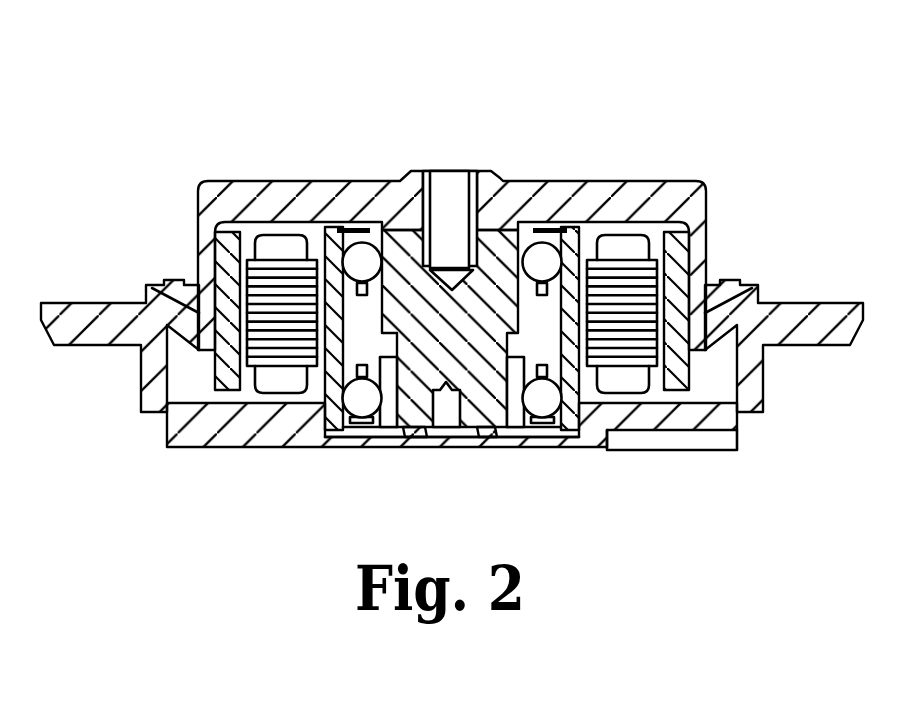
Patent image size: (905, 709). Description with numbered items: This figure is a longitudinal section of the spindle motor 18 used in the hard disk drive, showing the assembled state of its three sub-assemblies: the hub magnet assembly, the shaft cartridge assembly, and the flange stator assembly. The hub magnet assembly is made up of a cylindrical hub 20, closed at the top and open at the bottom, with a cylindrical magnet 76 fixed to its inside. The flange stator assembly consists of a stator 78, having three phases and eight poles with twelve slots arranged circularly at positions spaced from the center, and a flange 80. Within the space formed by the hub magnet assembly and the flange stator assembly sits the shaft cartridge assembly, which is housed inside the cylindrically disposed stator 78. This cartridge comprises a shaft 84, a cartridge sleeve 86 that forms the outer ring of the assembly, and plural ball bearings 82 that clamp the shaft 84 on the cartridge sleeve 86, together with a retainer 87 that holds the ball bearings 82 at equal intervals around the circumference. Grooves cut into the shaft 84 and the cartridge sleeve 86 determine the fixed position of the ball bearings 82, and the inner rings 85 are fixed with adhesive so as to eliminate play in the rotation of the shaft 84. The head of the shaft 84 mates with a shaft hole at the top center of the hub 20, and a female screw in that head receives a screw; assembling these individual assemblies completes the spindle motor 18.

The spindle motor 18 is at (520, 98).
The hub 20 is at (626, 190).
The magnet 76 is at (680, 270).
The stator 78 is at (628, 245).
The flange 80 is at (807, 323).
The ball bearings 82 is at (355, 252).
The shaft 84 is at (425, 175).
The inner rings 85 is at (518, 420).
The cartridge sleeve 86 is at (572, 380).
The retainer 87 is at (328, 370).